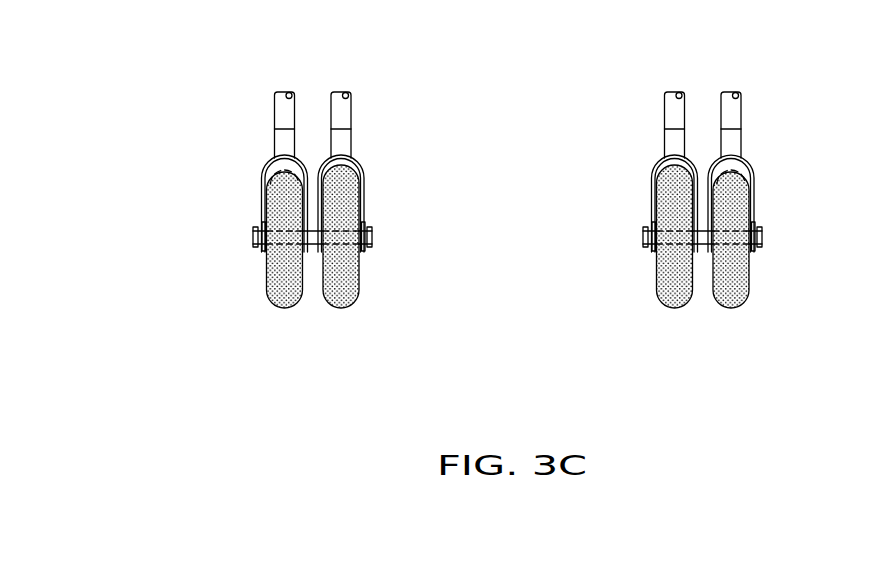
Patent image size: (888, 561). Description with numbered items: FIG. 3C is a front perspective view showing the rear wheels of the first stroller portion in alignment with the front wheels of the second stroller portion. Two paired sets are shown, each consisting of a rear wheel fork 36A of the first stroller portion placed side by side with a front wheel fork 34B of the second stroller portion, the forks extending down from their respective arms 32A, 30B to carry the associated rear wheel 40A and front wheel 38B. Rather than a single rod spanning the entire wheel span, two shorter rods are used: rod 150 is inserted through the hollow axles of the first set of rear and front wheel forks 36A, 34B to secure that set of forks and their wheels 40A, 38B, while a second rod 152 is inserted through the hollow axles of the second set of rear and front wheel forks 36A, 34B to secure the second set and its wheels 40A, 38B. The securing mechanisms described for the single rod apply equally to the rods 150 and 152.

The second arm 30B is at (343, 112).
The first arm 32A is at (285, 115).
The front wheel fork 34B is at (363, 202).
The rear wheel fork 36A is at (263, 208).
The front wheel 38B is at (338, 297).
The rear wheel 40A is at (285, 295).
The rod 150 is at (372, 237).
The second rod 152 is at (643, 238).